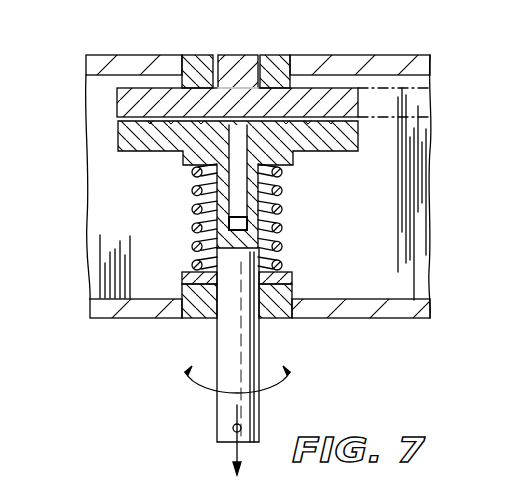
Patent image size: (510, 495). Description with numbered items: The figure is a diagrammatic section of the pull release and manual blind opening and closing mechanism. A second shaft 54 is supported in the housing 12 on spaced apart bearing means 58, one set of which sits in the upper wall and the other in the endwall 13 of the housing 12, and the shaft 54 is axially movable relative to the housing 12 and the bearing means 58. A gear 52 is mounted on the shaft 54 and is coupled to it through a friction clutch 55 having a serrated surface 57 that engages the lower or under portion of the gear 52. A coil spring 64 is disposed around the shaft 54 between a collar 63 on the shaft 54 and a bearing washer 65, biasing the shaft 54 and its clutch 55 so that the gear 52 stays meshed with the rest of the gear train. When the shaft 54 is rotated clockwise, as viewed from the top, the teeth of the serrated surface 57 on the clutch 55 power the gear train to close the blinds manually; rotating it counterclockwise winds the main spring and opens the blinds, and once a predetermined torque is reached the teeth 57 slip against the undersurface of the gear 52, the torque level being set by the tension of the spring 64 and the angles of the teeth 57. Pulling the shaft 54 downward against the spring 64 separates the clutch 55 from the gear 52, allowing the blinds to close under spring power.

The housing 12 is at (407, 55).
The endwall 13 is at (135, 319).
The gear 52 is at (138, 98).
The second shaft 54 is at (242, 345).
The friction clutch 55 is at (152, 146).
The serrated surface 57 is at (117, 117).
The bearing means 58 is at (273, 63).
The collar 63 is at (187, 168).
The coil spring 64 is at (283, 212).
The bearing washer 65 is at (295, 277).